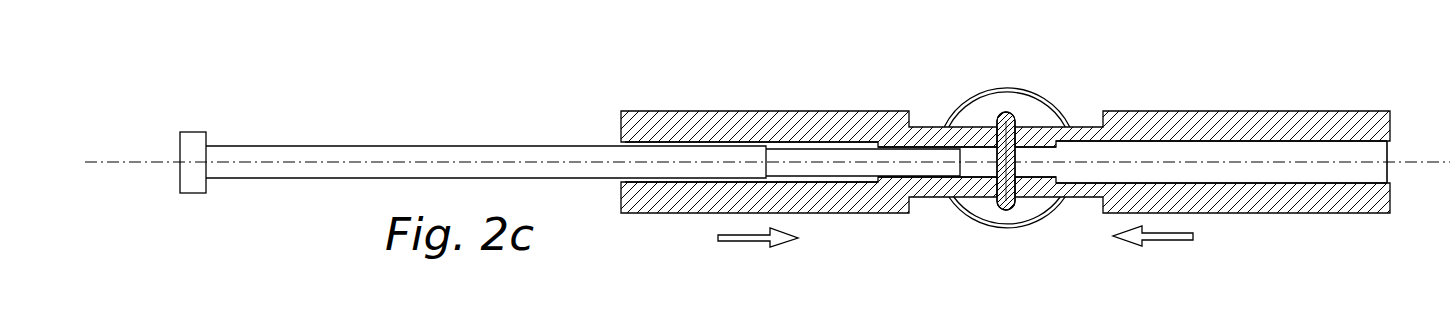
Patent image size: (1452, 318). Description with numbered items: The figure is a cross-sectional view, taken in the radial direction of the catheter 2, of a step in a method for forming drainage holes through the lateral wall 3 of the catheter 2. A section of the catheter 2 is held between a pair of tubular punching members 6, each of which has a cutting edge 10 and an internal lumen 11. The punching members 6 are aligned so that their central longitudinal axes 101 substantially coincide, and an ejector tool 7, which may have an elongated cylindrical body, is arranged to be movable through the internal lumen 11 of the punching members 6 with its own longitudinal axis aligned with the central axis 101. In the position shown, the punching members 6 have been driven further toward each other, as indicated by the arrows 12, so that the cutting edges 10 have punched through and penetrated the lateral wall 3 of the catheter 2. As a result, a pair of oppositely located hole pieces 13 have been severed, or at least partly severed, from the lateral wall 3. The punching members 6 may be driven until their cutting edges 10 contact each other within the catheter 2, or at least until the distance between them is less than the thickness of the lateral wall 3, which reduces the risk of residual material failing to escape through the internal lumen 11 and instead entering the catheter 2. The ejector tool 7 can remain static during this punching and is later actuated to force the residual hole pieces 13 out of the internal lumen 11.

The catheter 2 is at (1013, 109).
The lateral wall 3 is at (1003, 210).
The tubular punching member 6 is at (720, 111).
The ejector tool 7 is at (286, 168).
The cutting edge 10 is at (997, 134).
The internal lumen 11 is at (688, 183).
The arrows 12 is at (740, 238).
The hole piece 13 is at (998, 186).
The central longitudinal axis 101 is at (1400, 162).